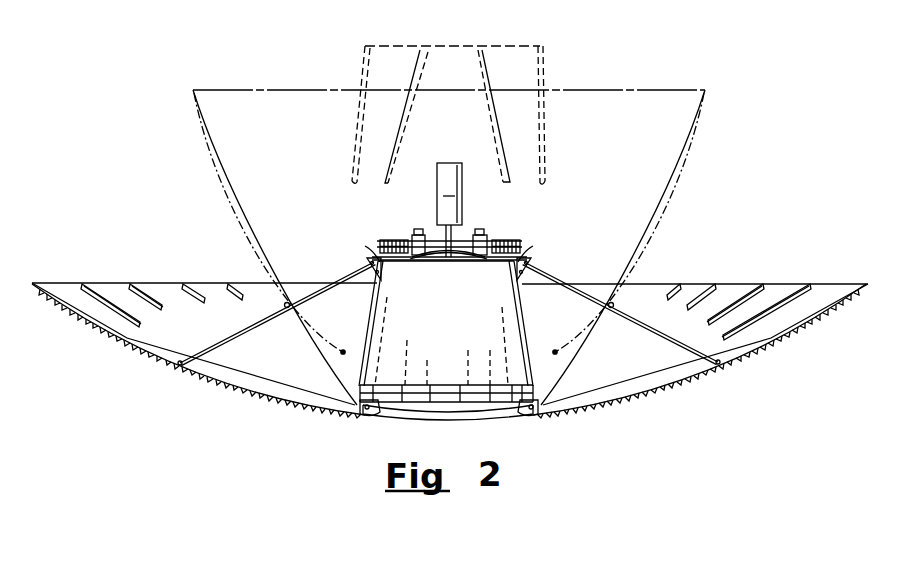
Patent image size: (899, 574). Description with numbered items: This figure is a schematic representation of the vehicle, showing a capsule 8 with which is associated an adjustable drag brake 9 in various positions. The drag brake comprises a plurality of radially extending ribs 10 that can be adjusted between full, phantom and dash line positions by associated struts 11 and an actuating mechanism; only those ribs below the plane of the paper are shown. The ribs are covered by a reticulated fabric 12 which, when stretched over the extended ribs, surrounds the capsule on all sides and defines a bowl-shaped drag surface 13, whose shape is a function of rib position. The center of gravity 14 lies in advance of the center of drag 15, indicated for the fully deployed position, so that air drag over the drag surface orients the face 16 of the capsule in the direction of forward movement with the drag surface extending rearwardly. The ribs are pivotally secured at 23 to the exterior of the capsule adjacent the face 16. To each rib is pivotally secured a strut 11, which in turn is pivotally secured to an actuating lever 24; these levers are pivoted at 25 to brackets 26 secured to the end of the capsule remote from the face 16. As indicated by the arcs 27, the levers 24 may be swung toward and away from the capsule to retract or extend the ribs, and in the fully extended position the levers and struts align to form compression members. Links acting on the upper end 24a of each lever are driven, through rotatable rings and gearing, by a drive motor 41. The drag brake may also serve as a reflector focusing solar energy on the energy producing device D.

The capsule 8 is at (457, 283).
The adjustable drag brake 9 is at (660, 393).
The radially extending ribs 10 is at (245, 374).
The struts 11 is at (670, 336).
The reticulated fabric 12 is at (740, 363).
The bowl-shaped drag surface 13 is at (812, 330).
The center of gravity 14 is at (447, 377).
The center of drag 15 is at (450, 123).
The face 16 is at (438, 420).
The pivot 23 is at (525, 413).
The actuating lever 24 is at (549, 274).
The upper end of the lever 24a is at (366, 248).
The pivot 25 is at (530, 263).
The brackets 26 is at (374, 276).
The arcs 27 is at (343, 352).
The drive motor 41 is at (478, 233).